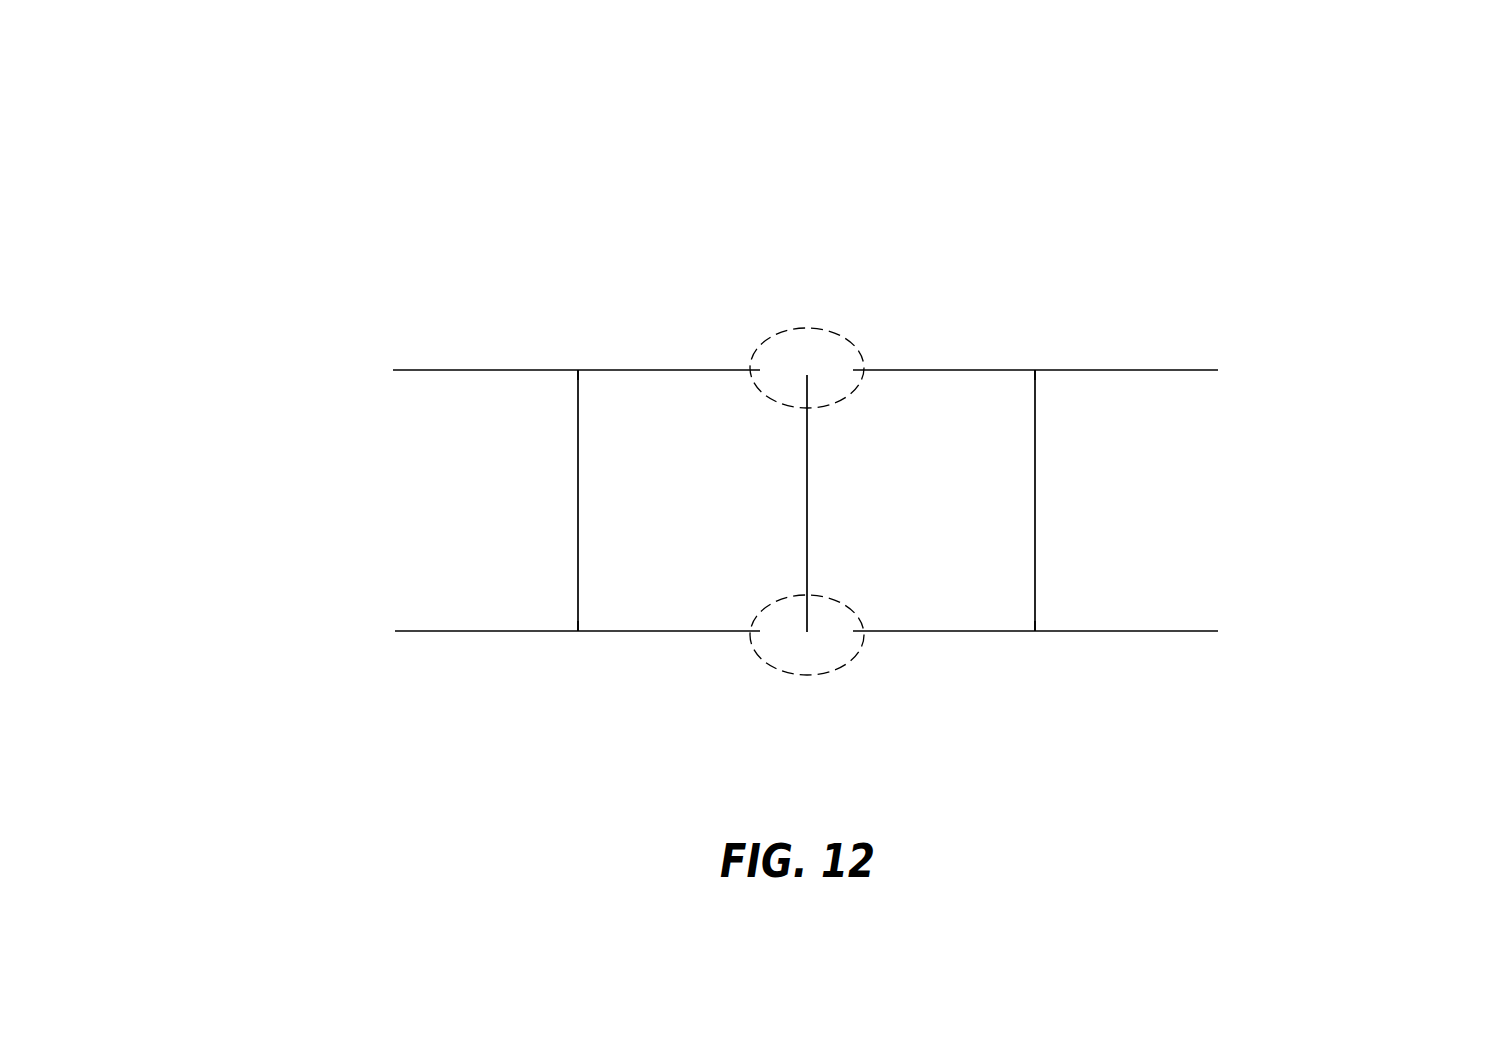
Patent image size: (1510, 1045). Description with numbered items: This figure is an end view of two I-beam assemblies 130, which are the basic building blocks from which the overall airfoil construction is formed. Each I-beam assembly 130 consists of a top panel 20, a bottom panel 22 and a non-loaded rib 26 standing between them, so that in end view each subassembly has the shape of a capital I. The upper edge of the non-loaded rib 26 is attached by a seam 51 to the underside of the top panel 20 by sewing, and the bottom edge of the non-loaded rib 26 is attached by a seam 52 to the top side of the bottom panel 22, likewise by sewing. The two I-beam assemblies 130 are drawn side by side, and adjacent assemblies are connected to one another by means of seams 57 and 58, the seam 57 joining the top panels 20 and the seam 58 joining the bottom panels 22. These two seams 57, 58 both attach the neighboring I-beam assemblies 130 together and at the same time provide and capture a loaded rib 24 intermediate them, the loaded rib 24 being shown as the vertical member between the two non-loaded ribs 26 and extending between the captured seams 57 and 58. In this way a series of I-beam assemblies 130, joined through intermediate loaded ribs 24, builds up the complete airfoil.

The top panel 20 is at (1042, 290).
The bottom panel 22 is at (1045, 708).
The loaded rib 24 is at (807, 478).
The non-loaded rib 26 is at (1282, 493).
The seam 51 is at (1143, 423).
The seam 52 is at (1143, 582).
The seam 57 is at (788, 330).
The seam 58 is at (785, 674).
The I-beam assembly 130 is at (1094, 220).